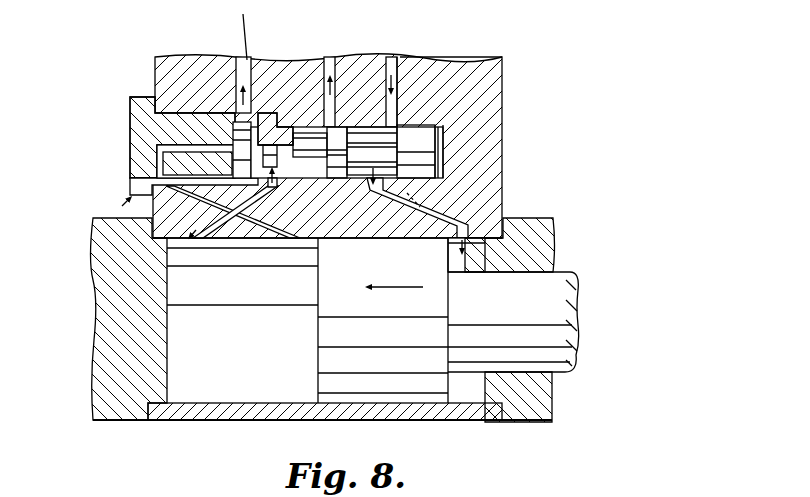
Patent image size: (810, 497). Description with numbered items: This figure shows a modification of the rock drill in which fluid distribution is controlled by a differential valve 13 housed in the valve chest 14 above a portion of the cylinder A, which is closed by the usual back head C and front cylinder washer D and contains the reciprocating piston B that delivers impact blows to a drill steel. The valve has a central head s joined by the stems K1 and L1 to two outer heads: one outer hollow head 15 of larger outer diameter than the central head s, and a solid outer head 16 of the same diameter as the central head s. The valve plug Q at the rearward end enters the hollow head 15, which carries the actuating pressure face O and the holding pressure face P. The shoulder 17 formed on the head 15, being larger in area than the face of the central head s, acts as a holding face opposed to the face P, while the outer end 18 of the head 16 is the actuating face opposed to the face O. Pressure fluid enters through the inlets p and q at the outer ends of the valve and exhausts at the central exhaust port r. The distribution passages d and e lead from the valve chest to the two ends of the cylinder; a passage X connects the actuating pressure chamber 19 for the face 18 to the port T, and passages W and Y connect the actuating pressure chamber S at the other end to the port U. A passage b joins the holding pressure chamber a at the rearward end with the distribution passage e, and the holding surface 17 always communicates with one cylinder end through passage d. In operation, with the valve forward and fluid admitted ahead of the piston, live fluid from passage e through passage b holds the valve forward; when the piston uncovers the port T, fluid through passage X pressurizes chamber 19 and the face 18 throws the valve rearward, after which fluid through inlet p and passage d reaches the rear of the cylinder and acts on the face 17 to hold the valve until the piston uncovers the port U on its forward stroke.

The outer head 16 is at (487, 62).
The valve chest 14 is at (440, 72).
The actuating pressure face O is at (198, 112).
The holding pressure face P is at (220, 110).
The actuating pressure chamber S is at (135, 130).
The passage W is at (165, 165).
The valve plug Q is at (195, 162).
The outer hollow head 15 is at (205, 108).
The inlet p is at (243, 30).
The shoulder 17 is at (258, 118).
The central exhaust port r is at (340, 120).
The stem L1 is at (372, 145).
The inlet q is at (400, 63).
The stem K1 is at (305, 140).
The differential valve 13 is at (310, 150).
The central head s is at (345, 135).
The actuating pressure face 18 is at (440, 130).
The actuating pressure chamber 19 is at (415, 162).
The port U is at (290, 233).
The passage Y is at (248, 217).
The distribution passage d is at (217, 228).
The port T is at (392, 212).
The passage X is at (400, 215).
The passage b is at (330, 205).
The holding pressure chamber a is at (121, 206).
The distribution passage e is at (451, 222).
The front cylinder washer D is at (530, 402).
The back head C is at (128, 407).
The cylinder A is at (458, 408).
The piston B is at (329, 370).